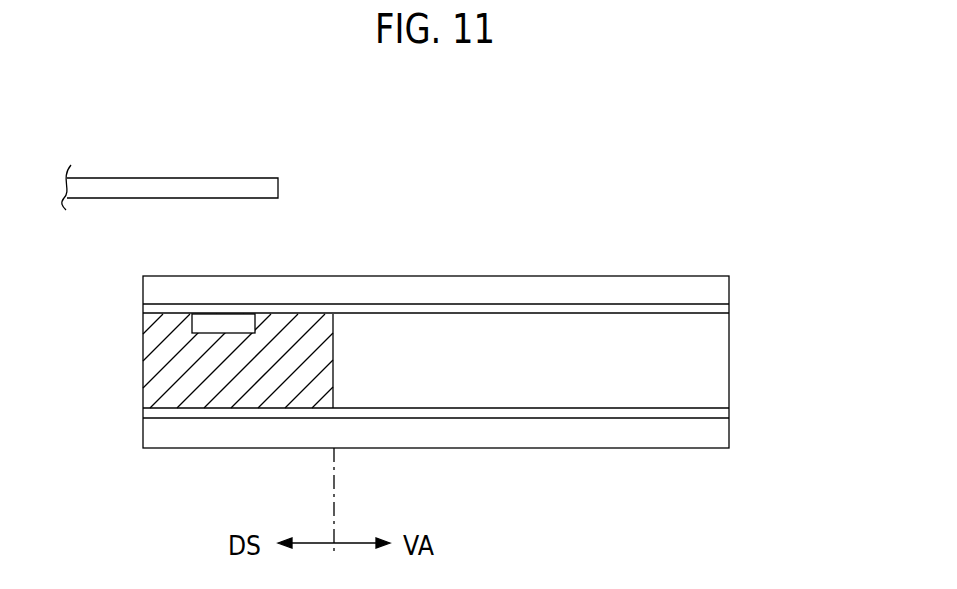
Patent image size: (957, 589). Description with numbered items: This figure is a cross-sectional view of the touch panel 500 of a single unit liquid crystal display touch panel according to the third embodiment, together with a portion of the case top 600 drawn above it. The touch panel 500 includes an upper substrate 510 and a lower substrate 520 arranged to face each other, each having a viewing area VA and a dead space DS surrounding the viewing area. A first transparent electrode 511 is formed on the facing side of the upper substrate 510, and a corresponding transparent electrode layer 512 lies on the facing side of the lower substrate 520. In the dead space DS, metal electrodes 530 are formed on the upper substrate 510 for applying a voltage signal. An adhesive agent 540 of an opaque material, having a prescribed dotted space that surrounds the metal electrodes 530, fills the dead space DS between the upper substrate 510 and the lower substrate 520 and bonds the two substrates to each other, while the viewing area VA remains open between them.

The touch panel 500 is at (477, 363).
The upper substrate 510 is at (721, 290).
The first transparent electrode 511 is at (721, 309).
The lower layer 512 is at (721, 412).
The lower substrate 520 is at (762, 436).
The metal electrodes 530 is at (202, 327).
The adhesive agent 540 is at (150, 374).
The case top 600 is at (245, 190).